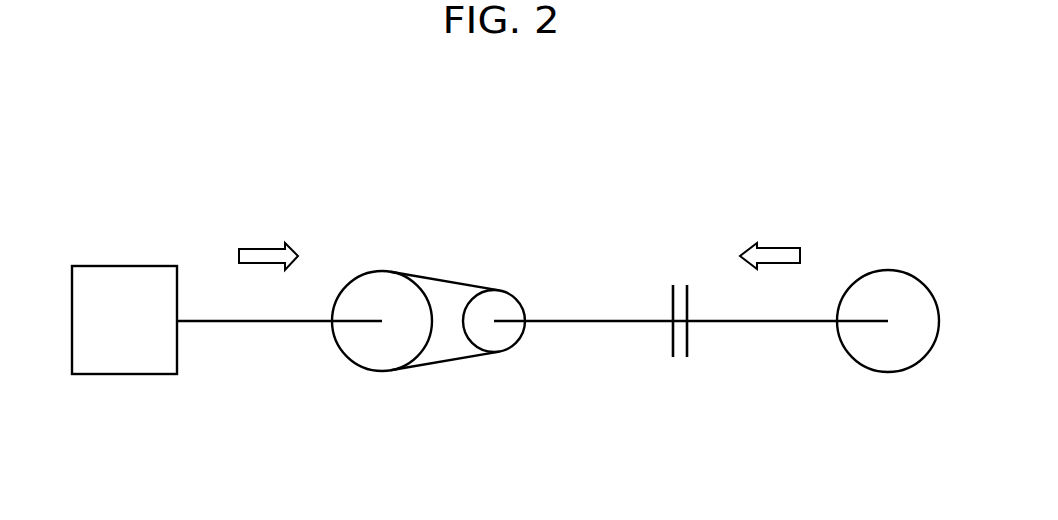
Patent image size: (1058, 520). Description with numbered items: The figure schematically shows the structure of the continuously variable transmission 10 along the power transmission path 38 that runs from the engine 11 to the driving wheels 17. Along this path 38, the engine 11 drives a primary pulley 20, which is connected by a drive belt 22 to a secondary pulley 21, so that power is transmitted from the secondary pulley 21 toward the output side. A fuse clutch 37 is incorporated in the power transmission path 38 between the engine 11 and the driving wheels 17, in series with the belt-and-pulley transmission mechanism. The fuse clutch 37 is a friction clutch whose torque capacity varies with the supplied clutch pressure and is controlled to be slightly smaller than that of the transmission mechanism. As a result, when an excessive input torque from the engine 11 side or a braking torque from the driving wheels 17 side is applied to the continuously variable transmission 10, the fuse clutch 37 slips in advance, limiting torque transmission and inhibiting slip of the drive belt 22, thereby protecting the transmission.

The continuously variable transmission 10 is at (613, 168).
The engine 11 is at (122, 375).
The driving wheels 17 is at (890, 362).
The primary pulley 20 is at (378, 360).
The secondary pulley 21 is at (503, 340).
The drive belt 22 is at (445, 364).
The fuse clutch 37 is at (676, 372).
The power transmission path 38 is at (259, 321).